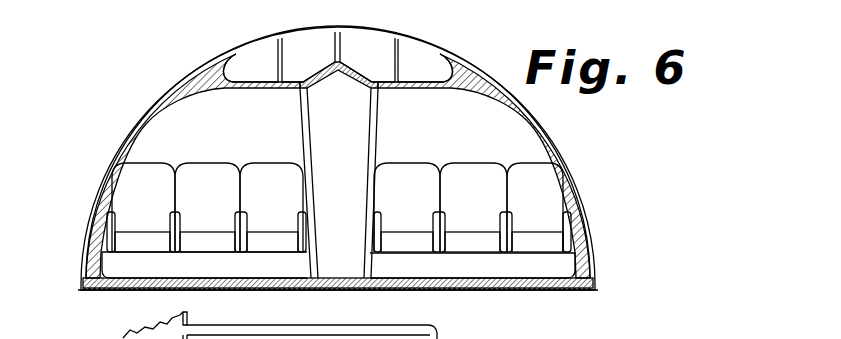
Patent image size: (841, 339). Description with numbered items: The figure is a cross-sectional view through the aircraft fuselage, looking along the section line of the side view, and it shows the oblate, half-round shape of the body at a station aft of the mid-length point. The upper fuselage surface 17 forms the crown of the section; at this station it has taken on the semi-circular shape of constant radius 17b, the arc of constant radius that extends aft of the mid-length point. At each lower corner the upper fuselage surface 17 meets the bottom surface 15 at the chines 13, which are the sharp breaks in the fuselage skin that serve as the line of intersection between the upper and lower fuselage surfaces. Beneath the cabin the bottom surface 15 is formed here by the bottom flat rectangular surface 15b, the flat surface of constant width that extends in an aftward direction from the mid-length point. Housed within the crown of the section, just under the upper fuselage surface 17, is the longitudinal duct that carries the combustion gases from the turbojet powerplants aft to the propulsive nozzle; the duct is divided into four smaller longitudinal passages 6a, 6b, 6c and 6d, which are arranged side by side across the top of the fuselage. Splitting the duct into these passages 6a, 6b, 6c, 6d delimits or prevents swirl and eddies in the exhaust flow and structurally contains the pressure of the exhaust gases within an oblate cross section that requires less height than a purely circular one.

The longitudinal passage 6a is at (428, 79).
The longitudinal passage 6b is at (376, 66).
The longitudinal passage 6c is at (318, 66).
The longitudinal passage 6d is at (262, 79).
The chines 13 is at (82, 290).
The bottom surface 15 is at (502, 290).
The bottom flat rectangular surface 15b is at (391, 290).
The upper fuselage surface 17 is at (145, 118).
The semi-circular shape of constant radius 17b is at (204, 68).